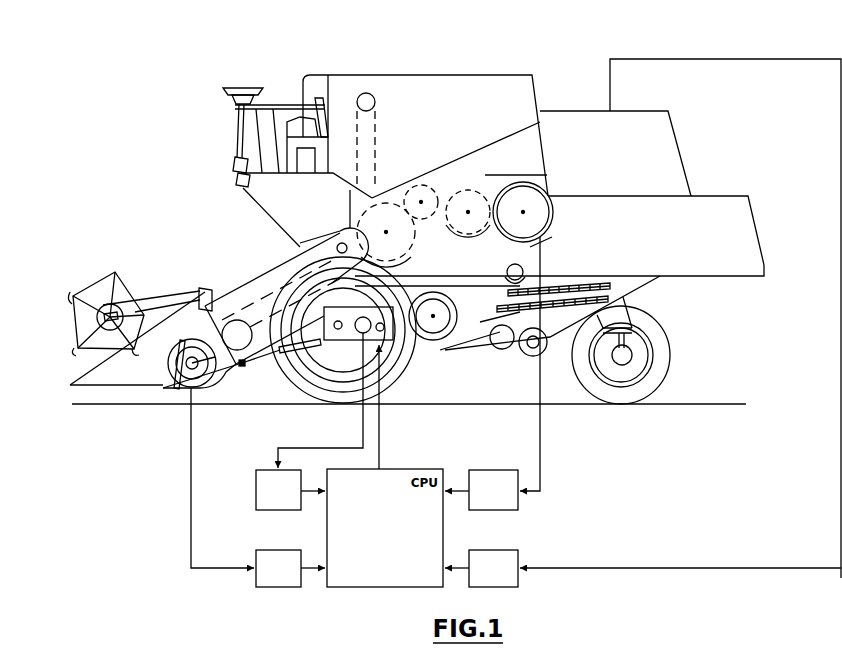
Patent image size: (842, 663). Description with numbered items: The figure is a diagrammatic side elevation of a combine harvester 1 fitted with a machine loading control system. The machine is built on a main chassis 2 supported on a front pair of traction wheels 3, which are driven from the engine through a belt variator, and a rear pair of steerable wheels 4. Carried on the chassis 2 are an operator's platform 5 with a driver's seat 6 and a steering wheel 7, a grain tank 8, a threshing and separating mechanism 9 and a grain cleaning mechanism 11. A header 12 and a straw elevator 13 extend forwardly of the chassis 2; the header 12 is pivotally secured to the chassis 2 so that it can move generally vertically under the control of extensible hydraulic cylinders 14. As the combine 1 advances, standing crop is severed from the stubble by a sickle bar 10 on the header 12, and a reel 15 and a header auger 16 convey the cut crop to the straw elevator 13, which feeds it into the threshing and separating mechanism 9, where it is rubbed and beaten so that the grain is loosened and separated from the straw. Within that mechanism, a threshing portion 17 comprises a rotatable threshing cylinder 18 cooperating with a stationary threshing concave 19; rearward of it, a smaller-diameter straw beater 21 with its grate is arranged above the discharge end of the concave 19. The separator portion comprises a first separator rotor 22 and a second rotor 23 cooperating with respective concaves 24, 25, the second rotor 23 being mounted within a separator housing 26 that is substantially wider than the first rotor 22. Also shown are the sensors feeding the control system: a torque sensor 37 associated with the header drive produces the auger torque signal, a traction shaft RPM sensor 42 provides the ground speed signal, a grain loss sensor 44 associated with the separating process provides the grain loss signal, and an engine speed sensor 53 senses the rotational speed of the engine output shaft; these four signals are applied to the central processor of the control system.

The combine harvester 1 is at (566, 107).
The main chassis 2 is at (275, 262).
The front traction wheels 3 is at (400, 375).
The rear steerable wheels 4 is at (662, 369).
The operator's platform 5 is at (236, 182).
The driver's seat 6 is at (297, 122).
The steering wheel 7 is at (241, 88).
The grain tank 8 is at (451, 73).
The threshing and separating mechanism 9 is at (486, 173).
The sickle bar 10 is at (160, 385).
The grain cleaning mechanism 11 is at (622, 300).
The header 12 is at (212, 390).
The straw elevator 13 is at (236, 289).
The extensible hydraulic cylinders 14 is at (320, 398).
The reel 15 is at (90, 290).
The header auger 16 is at (188, 392).
The threshing portion 17 is at (394, 178).
The threshing cylinder 18 is at (360, 222).
The threshing concave 19 is at (300, 241).
The straw beater 21 is at (428, 185).
The first separator rotor 22 is at (466, 190).
The second separator rotor 23 is at (543, 215).
The first separator concave 24 is at (505, 271).
The second separator concave 25 is at (540, 277).
The separator housing 26 is at (519, 183).
The torque sensor 37 is at (258, 487).
The traction shaft RPM sensor 42 is at (309, 421).
The grain loss sensor 44 is at (492, 373).
The engine speed sensor 53 is at (643, 568).